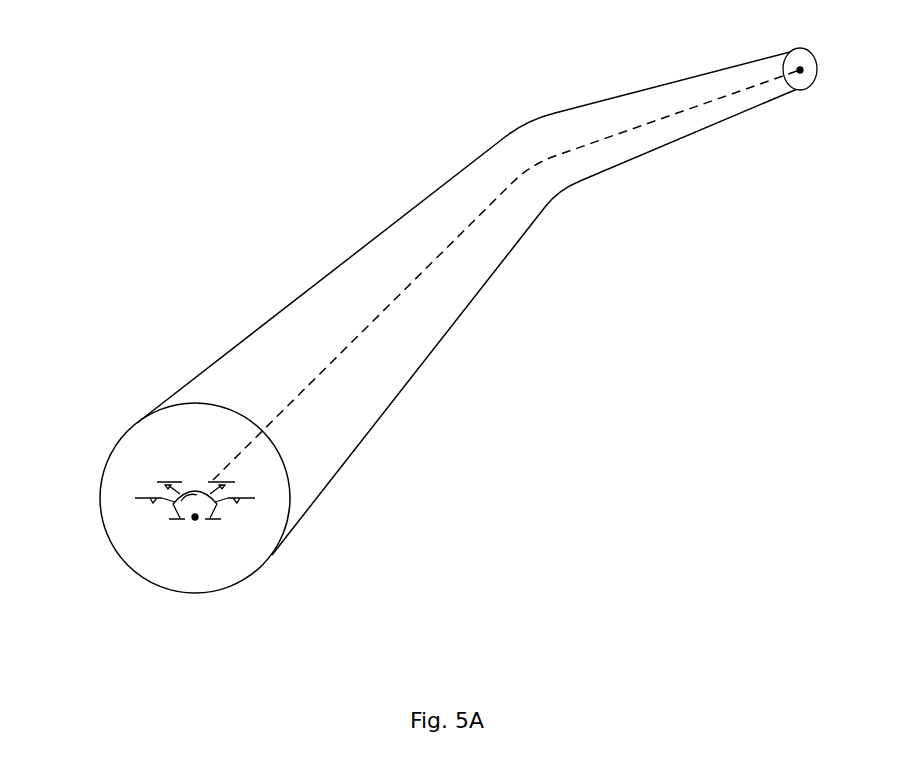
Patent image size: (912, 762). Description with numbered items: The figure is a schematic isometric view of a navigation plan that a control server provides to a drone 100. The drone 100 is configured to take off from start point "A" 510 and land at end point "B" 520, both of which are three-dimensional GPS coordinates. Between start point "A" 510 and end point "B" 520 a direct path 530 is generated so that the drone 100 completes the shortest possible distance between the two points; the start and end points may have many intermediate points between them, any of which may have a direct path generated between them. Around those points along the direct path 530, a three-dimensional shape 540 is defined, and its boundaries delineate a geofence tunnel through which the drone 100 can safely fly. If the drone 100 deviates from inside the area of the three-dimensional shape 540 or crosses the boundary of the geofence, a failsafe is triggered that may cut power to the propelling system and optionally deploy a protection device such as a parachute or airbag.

The drone 100 is at (135, 498).
The start point "A" 510 is at (198, 527).
The end point "B" 520 is at (803, 79).
The direct path 530 is at (407, 292).
The 3D shape 540 is at (415, 182).